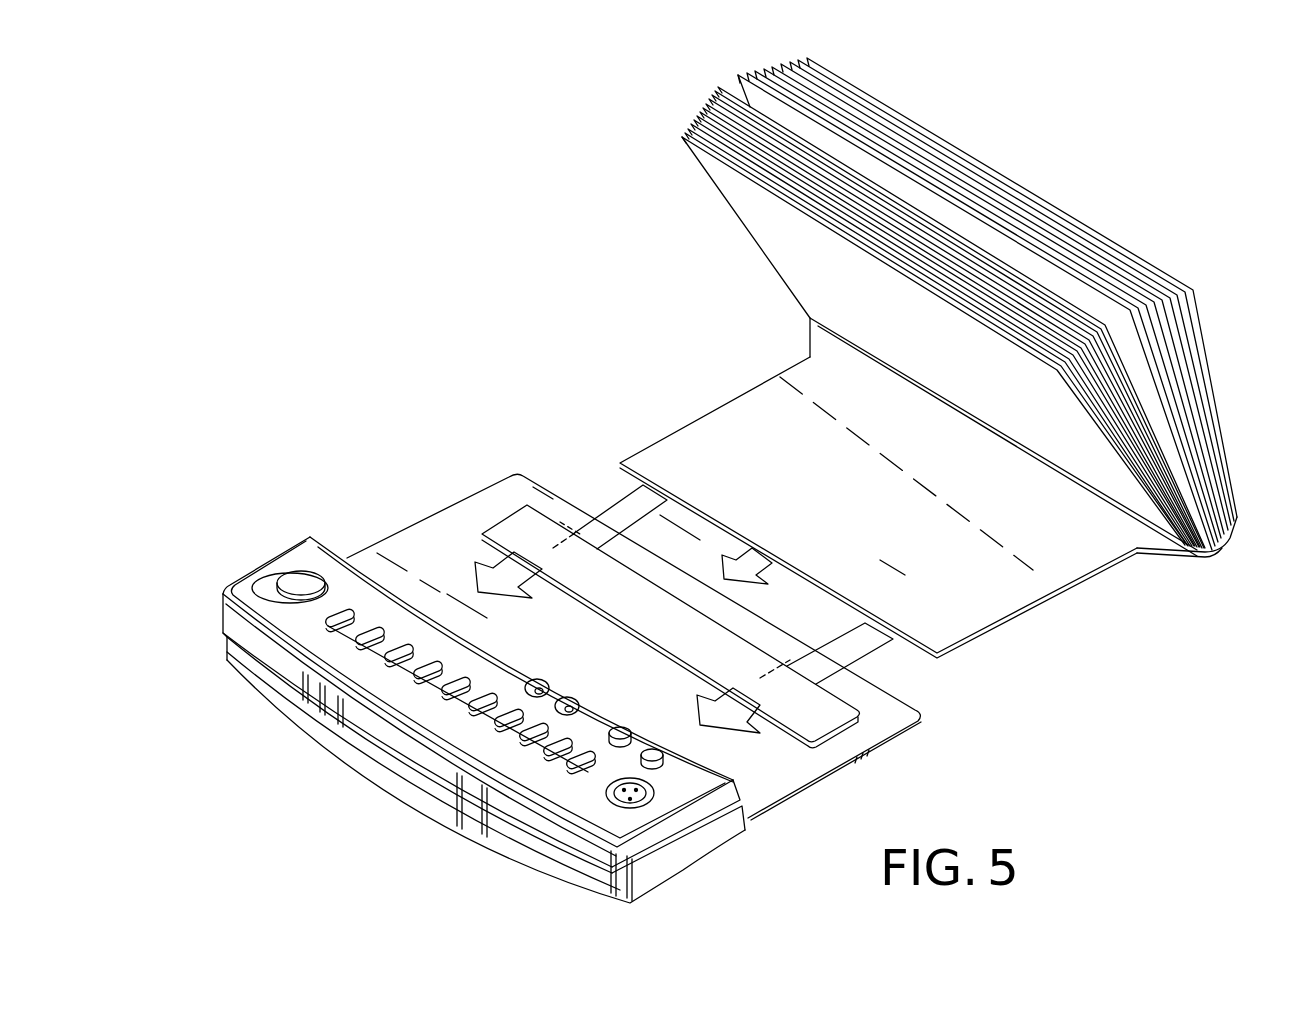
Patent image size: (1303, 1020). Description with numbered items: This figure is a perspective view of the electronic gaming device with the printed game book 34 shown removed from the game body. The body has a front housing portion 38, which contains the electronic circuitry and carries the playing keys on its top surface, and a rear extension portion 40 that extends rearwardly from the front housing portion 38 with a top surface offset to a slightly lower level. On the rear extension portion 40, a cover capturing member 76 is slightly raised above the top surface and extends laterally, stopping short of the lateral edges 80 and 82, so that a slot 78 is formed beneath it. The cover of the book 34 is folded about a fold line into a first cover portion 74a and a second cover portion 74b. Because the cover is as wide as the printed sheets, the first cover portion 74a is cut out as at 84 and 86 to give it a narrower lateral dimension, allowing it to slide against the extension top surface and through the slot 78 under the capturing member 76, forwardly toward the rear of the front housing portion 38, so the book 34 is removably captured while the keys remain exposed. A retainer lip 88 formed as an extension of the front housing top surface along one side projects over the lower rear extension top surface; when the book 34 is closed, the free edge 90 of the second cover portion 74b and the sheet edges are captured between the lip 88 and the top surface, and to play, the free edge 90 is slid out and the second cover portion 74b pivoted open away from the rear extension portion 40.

The game book 34 is at (641, 202).
The front housing portion 38 is at (285, 703).
The rear extension portion 40 is at (805, 790).
The first cover portion 74a is at (1053, 584).
The second cover portion 74b is at (1205, 328).
The cover capturing member 76 is at (520, 530).
The slot 78 is at (566, 520).
The lateral edge 80 is at (425, 520).
The lateral edge 82 is at (870, 758).
The cut out 84 is at (808, 337).
The cut out 86 is at (1180, 560).
The retainer lip 88 is at (740, 792).
The free edge 90 is at (1015, 178).